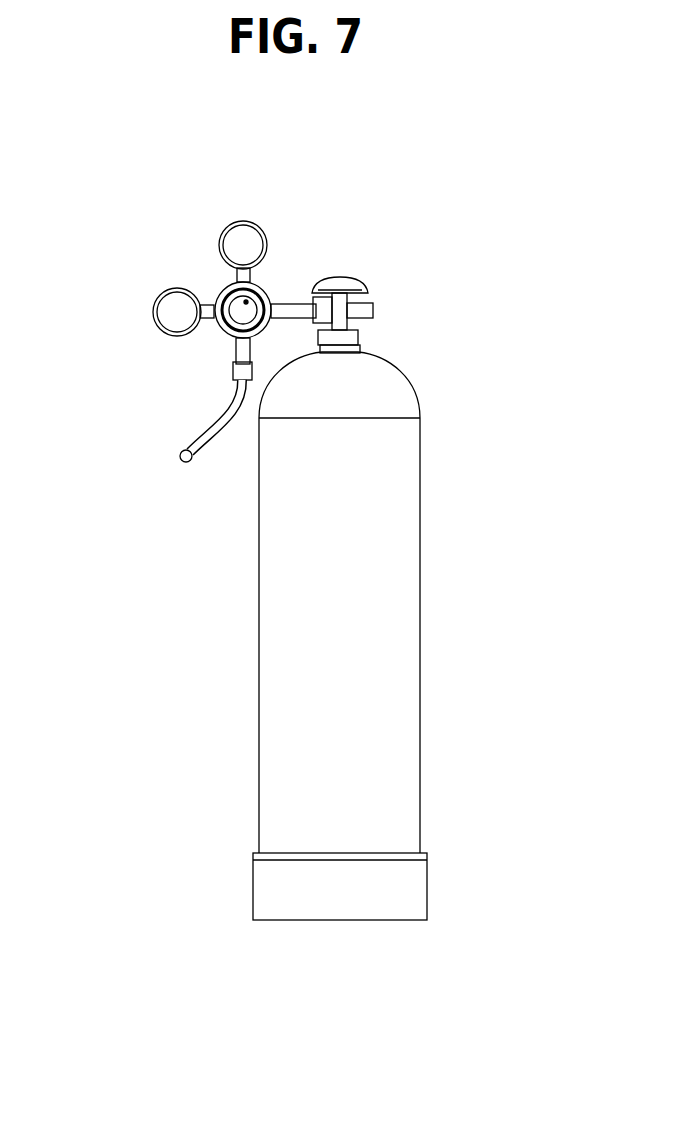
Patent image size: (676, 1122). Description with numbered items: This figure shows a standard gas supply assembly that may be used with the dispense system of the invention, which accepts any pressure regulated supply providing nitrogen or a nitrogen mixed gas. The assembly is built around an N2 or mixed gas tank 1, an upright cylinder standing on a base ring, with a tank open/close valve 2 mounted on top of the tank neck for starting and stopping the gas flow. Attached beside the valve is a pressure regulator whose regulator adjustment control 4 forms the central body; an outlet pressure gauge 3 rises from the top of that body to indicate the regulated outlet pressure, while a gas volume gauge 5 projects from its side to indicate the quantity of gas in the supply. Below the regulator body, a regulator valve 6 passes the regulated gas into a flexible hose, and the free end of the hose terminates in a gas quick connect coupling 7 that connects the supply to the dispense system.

The N2 or mixed gas tank 1 is at (423, 430).
The tank open/close valve 2 is at (373, 287).
The outlet pressure gauge 3 is at (251, 220).
The regulator adjustment control 4 is at (229, 287).
The gas volume gauge 5 is at (151, 304).
The regulator valve 6 is at (233, 363).
The gas quick connect coupling 7 is at (176, 454).